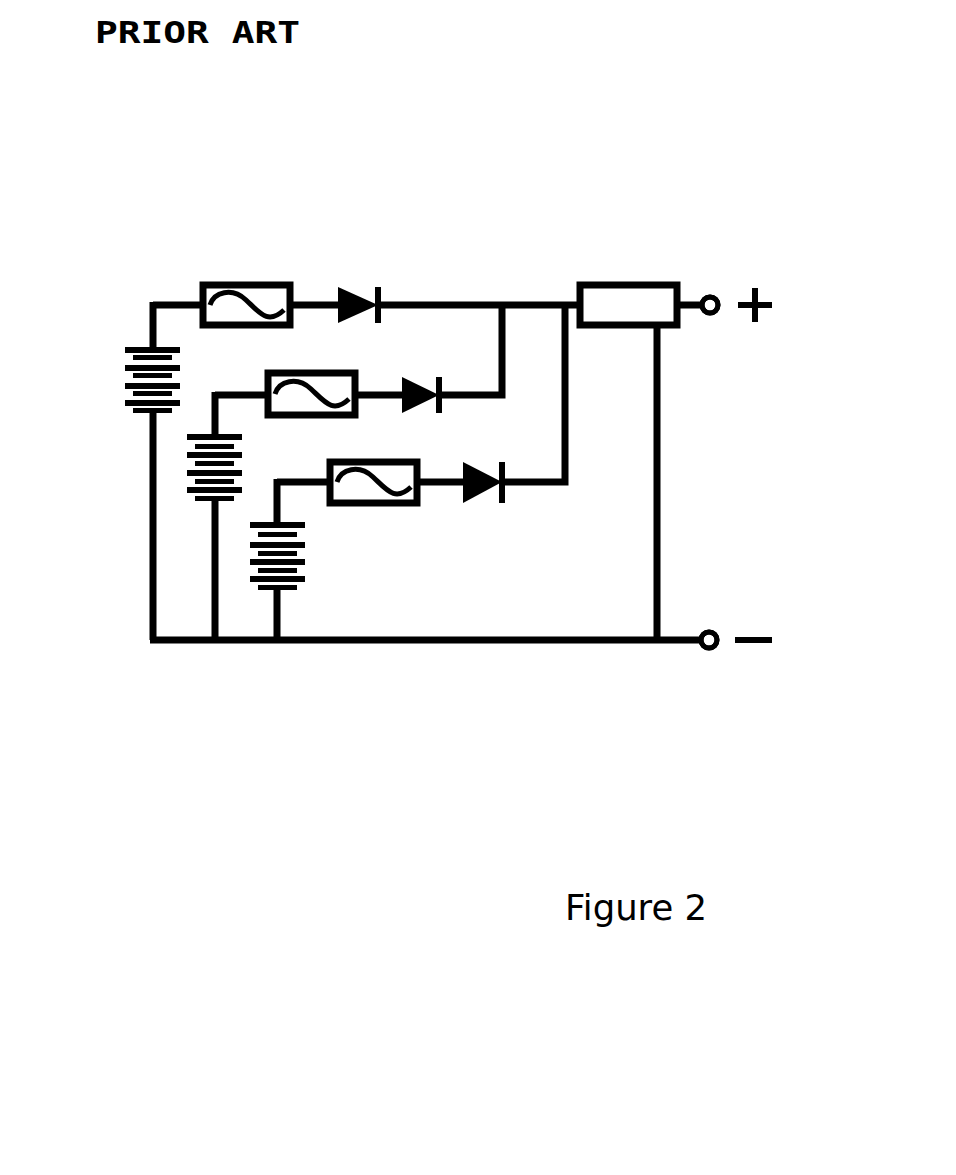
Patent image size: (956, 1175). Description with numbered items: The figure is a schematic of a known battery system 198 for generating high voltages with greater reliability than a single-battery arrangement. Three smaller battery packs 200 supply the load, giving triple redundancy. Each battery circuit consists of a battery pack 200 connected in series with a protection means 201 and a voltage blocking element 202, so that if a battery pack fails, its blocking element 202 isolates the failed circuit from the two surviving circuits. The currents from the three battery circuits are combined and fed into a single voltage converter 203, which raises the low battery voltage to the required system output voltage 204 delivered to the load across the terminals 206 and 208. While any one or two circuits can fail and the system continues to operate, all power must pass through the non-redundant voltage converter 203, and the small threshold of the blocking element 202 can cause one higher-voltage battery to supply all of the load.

The battery system 198 is at (231, 797).
The battery pack 200 is at (240, 557).
The protection means 201 is at (253, 273).
The voltage blocking element 202 is at (358, 285).
The voltage converter 203 is at (622, 310).
The system output voltage 204 is at (717, 317).
The terminal 206 is at (715, 285).
The terminal 208 is at (715, 653).